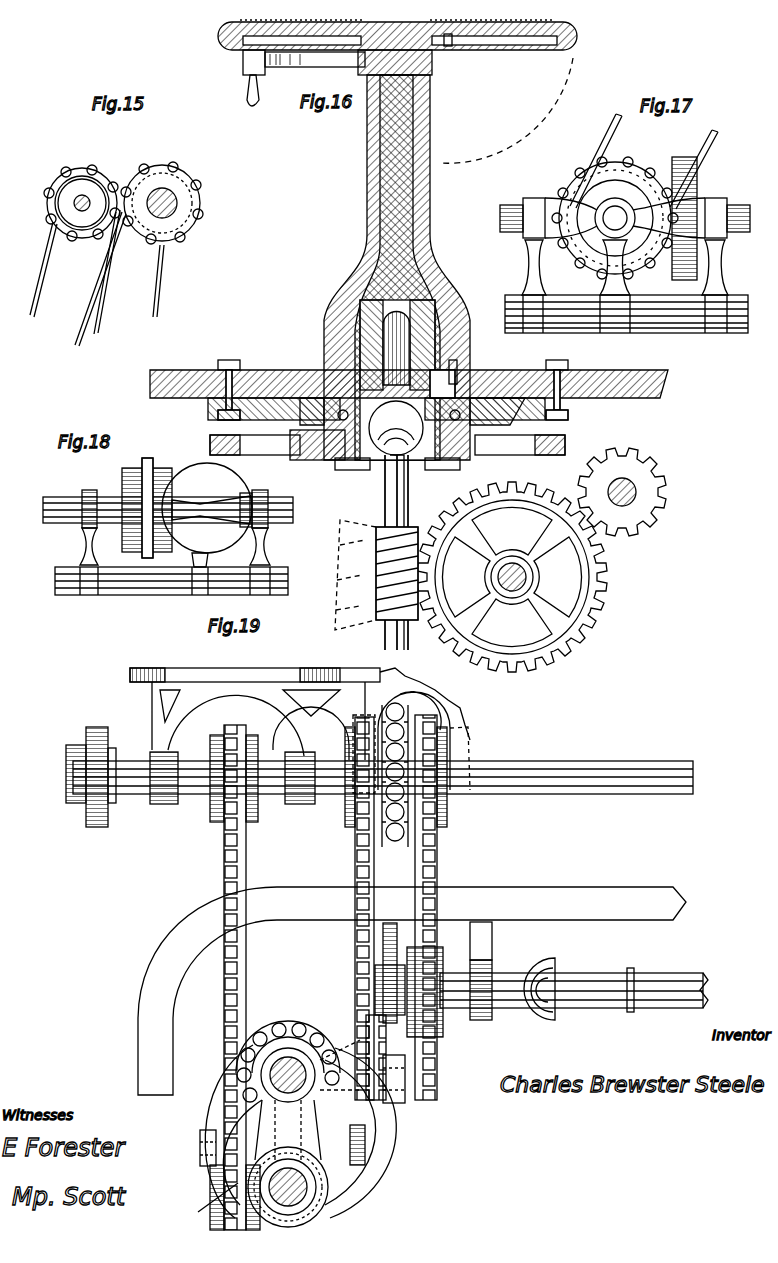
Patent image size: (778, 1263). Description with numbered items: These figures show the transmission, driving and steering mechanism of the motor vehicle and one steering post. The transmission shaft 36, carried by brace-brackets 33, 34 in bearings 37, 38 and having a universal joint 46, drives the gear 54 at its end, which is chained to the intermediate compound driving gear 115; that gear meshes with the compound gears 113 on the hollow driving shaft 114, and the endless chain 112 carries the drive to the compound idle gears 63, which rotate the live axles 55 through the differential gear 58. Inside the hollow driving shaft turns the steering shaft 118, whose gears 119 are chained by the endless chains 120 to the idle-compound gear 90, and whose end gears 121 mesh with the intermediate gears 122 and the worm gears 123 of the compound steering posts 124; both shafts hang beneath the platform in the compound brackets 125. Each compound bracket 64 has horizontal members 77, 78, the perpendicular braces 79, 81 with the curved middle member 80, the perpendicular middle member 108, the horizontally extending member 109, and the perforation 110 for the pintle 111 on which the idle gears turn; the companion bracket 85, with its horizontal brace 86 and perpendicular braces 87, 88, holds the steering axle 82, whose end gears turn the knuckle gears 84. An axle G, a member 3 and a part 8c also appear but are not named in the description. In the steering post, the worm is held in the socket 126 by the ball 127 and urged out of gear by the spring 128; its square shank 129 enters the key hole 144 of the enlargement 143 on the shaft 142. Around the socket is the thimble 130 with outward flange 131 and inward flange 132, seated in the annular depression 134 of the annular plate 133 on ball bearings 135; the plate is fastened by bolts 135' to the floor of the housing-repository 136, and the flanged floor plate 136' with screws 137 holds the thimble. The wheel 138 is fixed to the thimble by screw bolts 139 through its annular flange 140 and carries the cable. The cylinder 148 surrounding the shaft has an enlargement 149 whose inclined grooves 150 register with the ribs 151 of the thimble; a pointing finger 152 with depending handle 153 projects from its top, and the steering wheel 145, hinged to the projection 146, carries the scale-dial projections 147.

In FIG. 15, the intermediate compound driving gear 115 is at (63, 177).
In FIG. 19, the intermediate compound driving gear 115 is at (440, 812).
In FIG. 15, the duplicate gears 121 is at (199, 190).
In FIG. 16, the duplicate gears 121 is at (662, 485).
In FIG. 19, the duplicate gears 121 is at (84, 815).
In FIG. 15, the endless chains 120 is at (145, 259).
In FIG. 19, the endless chains 120 is at (224, 893).
In FIG. 16, the projections 147 is at (455, 22).
In FIG. 16, the projection 146 is at (448, 46).
In FIG. 16, the steering wheel 145 is at (527, 52).
In FIG. 16, the pointing finger 152 is at (327, 60).
In FIG. 16, the handle 153 is at (255, 104).
In FIG. 16, the shaft 142 is at (410, 190).
In FIG. 16, the compound steering posts 124 is at (368, 225).
In FIG. 16, the cylinder 148 is at (432, 237).
In FIG. 16, the enlargement 143 is at (452, 295).
In FIG. 16, the inclined grooves 150 is at (455, 300).
In FIG. 16, the enlargement 149 is at (450, 320).
In FIG. 16, the square shank 129 is at (465, 350).
In FIG. 16, the flanged floor plate 136' is at (467, 378).
In FIG. 16, the screws 137 is at (460, 368).
In FIG. 16, the bolts 135' is at (405, 383).
In FIG. 16, the thimble 130 is at (332, 328).
In FIG. 16, the key hole 144 is at (330, 352).
In FIG. 16, the spring 128 is at (322, 363).
In FIG. 16, the annular plate 133 is at (210, 404).
In FIG. 16, the housing-repositories 136 is at (429, 384).
In FIG. 16, the outward annular flange 131 is at (525, 415).
In FIG. 16, the wheel 138 is at (387, 445).
In FIG. 16, the annular depression 134 is at (295, 458).
In FIG. 16, the socket 126 is at (335, 460).
In FIG. 16, the annular flange 140 is at (344, 472).
In FIG. 16, the inwardly annular flange 132 is at (434, 472).
In FIG. 16, the screw bolts 139 is at (458, 479).
In FIG. 16, the ball bearings 135 is at (480, 465).
In FIG. 16, the ribs 151 is at (516, 448).
In FIG. 16, the ball 127 is at (396, 525).
In FIG. 16, the steering shaft 118 is at (634, 500).
In FIG. 19, the steering shaft 118 is at (133, 795).
In FIG. 16, the intermediate gears 122 is at (604, 590).
In FIG. 16, the worm gears 123 is at (396, 624).
In FIG. 17, the compound idle gears 63 is at (615, 218).
In FIG. 18, the compound idle gears 63 is at (207, 508).
In FIG. 19, the compound idle gears 63 is at (378, 1052).
In FIG. 17, the horizontal member 77 is at (625, 197).
In FIG. 19, the horizontal member 77 is at (405, 1066).
In FIG. 17, the compound brackets 64 is at (636, 267).
In FIG. 19, the compound brackets 64 is at (418, 1107).
In FIG. 17, the rail 8c is at (533, 331).
In FIG. 17, the curved middle member 80 is at (618, 329).
In FIG. 18, the curved middle member 80 is at (199, 595).
In FIG. 19, the curved middle member 80 is at (372, 1160).
In FIG. 17, the perpendicular brace 79 is at (716, 329).
In FIG. 18, the perpendicular brace 79 is at (89, 595).
In FIG. 19, the perpendicular brace 79 is at (310, 1188).
In FIG. 18, the differential gear 58 is at (160, 466).
In FIG. 18, the horizontal member 78 is at (248, 494).
In FIG. 18, the shaft G is at (288, 508).
In FIG. 19, the shaft G is at (260, 1068).
In FIG. 18, the steering axle 82 is at (58, 580).
In FIG. 19, the steering axle 82 is at (300, 1200).
In FIG. 18, the perpendicular brace 81 is at (263, 595).
In FIG. 19, the perpendicular brace 81 is at (356, 1145).
In FIG. 19, the compound brackets 125 is at (265, 692).
In FIG. 19, the duplicate gears 119 is at (217, 818).
In FIG. 19, the compound gears 113 is at (348, 818).
In FIG. 19, the hollow driving shaft 114 is at (694, 778).
In FIG. 19, the arm 3 is at (412, 991).
In FIG. 19, the endless chain 112 is at (356, 942).
In FIG. 19, the brace-bracket 33 is at (391, 973).
In FIG. 19, the brace-bracket 34 is at (481, 941).
In FIG. 19, the bearing 37 is at (389, 1015).
In FIG. 19, the gear 54 is at (440, 1030).
In FIG. 19, the bearing 38 is at (482, 1020).
In FIG. 19, the universal joint 46 is at (540, 1020).
In FIG. 19, the transmission shaft 36 is at (705, 990).
In FIG. 19, the live axles 55 is at (240, 1082).
In FIG. 19, the perforation 110 is at (408, 1077).
In FIG. 19, the pintle 111 is at (408, 1088).
In FIG. 19, the horizontally extending member 109 is at (341, 1065).
In FIG. 19, the perpendicular middle member 108 is at (288, 1130).
In FIG. 19, the perpendicular brace 88 is at (215, 1130).
In FIG. 19, the compound brackets 85 is at (224, 1131).
In FIG. 19, the perpendicular brace 87 is at (225, 1150).
In FIG. 19, the gears 84 is at (347, 1158).
In FIG. 19, the horizontal brace 86 is at (200, 1190).
In FIG. 19, the idle-compound gear 90 is at (212, 1208).